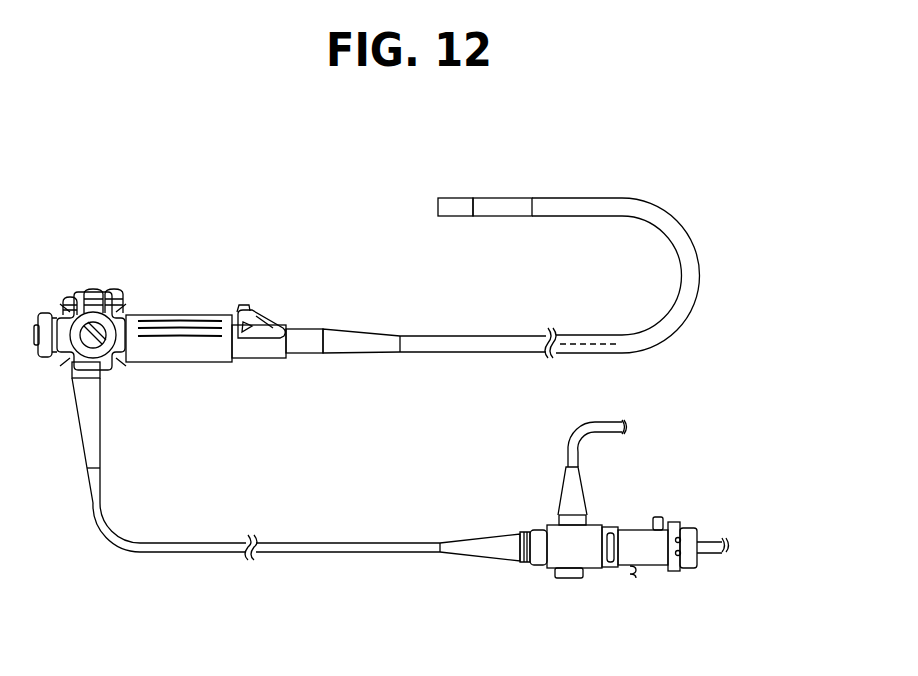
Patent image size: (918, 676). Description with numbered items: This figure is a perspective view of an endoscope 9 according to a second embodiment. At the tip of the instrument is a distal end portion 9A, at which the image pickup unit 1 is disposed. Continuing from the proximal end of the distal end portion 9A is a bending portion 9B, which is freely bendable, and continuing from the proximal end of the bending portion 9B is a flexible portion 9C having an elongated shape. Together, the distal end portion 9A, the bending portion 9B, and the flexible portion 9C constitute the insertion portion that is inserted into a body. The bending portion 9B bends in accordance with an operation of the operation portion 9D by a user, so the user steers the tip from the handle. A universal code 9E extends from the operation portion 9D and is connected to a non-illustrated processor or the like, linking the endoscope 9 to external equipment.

The endoscope 9 is at (738, 152).
The image pickup unit 1 is at (458, 219).
The distal end portion 9A is at (450, 198).
The bending portion 9B is at (516, 198).
The flexible portion 9C is at (702, 263).
The operation portion 9D is at (103, 288).
The universal code 9E is at (200, 543).